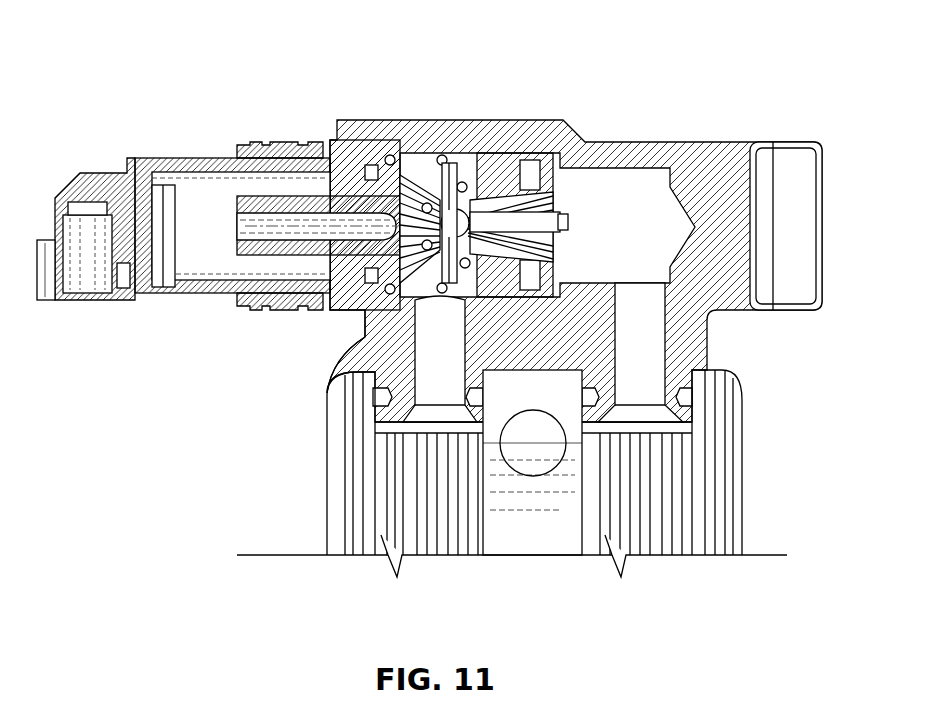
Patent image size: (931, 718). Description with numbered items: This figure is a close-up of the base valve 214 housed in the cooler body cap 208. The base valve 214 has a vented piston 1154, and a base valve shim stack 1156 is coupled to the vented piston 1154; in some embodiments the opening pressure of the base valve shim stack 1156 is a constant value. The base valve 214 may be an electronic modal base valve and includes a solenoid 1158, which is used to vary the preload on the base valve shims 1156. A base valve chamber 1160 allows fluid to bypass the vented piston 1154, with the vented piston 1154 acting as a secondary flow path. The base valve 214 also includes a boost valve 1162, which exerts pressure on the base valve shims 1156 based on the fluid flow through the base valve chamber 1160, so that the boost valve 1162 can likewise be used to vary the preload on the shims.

The cooler body cap 208 is at (732, 288).
The base valve 214 is at (345, 158).
The vented piston 1154 is at (540, 155).
The base valve shim stack 1156 is at (500, 153).
The solenoid 1158 is at (86, 270).
The base valve chamber 1160 is at (367, 342).
The boost valve 1162 is at (478, 150).